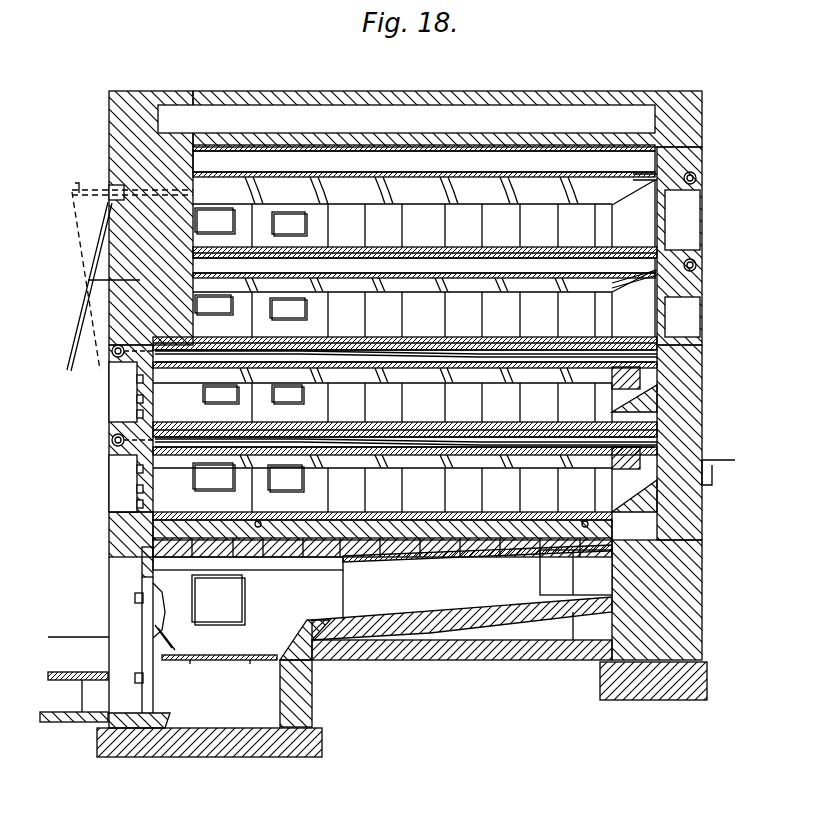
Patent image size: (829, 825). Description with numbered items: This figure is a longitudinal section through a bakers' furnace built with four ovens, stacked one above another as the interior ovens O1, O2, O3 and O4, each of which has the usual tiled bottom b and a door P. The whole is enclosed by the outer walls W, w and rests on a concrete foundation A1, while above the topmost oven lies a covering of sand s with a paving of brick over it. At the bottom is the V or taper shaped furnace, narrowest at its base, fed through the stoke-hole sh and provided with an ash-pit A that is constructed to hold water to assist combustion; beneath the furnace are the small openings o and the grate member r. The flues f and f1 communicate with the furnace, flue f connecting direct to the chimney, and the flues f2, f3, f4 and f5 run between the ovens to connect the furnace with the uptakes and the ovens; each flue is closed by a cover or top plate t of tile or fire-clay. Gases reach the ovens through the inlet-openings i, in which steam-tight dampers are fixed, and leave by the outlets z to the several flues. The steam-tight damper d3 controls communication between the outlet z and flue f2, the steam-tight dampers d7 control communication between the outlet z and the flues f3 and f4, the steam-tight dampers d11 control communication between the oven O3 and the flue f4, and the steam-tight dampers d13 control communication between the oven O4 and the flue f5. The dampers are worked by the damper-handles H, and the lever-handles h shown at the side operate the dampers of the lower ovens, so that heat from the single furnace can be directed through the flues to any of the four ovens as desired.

The outer wall W is at (108, 157).
The outer wall w is at (690, 138).
The covering of sand s is at (406, 119).
The cover or top plate t is at (308, 134).
The flue f5 is at (424, 161).
The tiled bottom b is at (382, 344).
The inlet-opening i is at (250, 350).
The interior oven O4 is at (415, 230).
The interior oven O3 is at (419, 324).
The interior oven O2 is at (419, 407).
The interior oven O1 is at (419, 497).
The flue f4 is at (424, 267).
The flue f3 is at (405, 354).
The flue f2 is at (405, 441).
The flue f1 is at (462, 604).
The steam-tight damper d13 is at (697, 178).
The steam-tight damper d11 is at (698, 266).
The steam-tight damper d7 is at (660, 358).
The steam-tight damper d3 is at (660, 441).
The outlet z is at (626, 418).
The oven door P is at (703, 254).
The damper-handle H is at (112, 356).
The lever-handle h is at (70, 350).
The ash-pit A is at (120, 534).
The opening o is at (421, 524).
The flue f is at (218, 600).
The grate bar r is at (215, 623).
The stoke-hole sh is at (74, 679).
The concrete foundation A1 is at (180, 758).